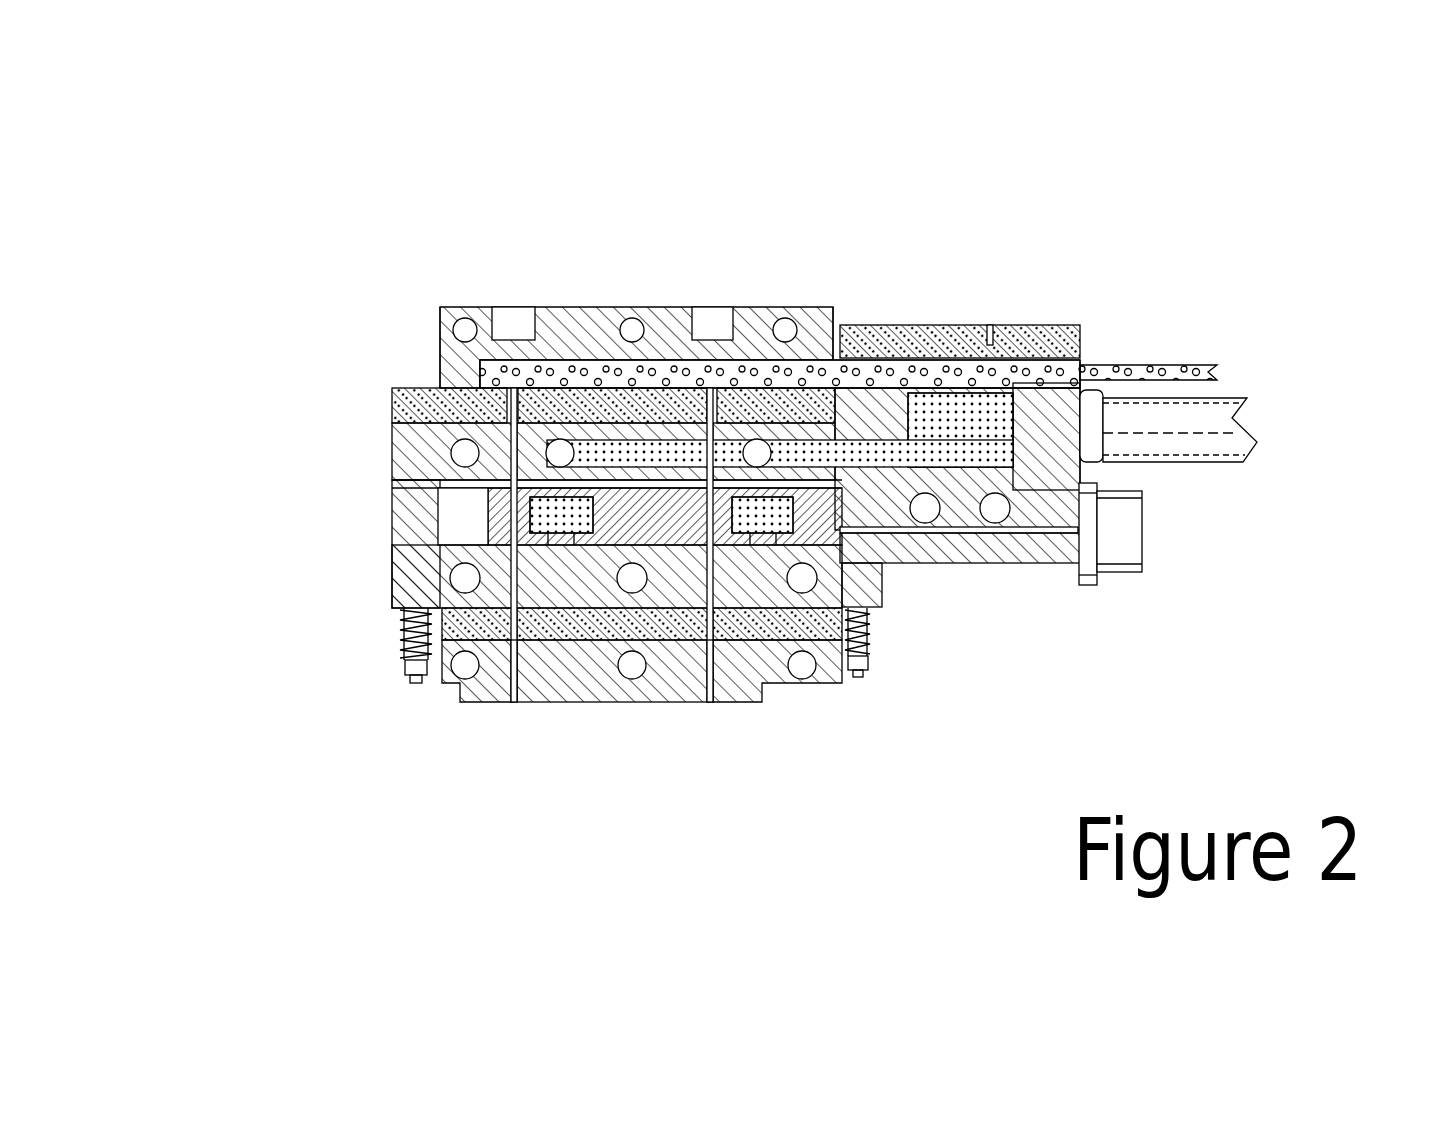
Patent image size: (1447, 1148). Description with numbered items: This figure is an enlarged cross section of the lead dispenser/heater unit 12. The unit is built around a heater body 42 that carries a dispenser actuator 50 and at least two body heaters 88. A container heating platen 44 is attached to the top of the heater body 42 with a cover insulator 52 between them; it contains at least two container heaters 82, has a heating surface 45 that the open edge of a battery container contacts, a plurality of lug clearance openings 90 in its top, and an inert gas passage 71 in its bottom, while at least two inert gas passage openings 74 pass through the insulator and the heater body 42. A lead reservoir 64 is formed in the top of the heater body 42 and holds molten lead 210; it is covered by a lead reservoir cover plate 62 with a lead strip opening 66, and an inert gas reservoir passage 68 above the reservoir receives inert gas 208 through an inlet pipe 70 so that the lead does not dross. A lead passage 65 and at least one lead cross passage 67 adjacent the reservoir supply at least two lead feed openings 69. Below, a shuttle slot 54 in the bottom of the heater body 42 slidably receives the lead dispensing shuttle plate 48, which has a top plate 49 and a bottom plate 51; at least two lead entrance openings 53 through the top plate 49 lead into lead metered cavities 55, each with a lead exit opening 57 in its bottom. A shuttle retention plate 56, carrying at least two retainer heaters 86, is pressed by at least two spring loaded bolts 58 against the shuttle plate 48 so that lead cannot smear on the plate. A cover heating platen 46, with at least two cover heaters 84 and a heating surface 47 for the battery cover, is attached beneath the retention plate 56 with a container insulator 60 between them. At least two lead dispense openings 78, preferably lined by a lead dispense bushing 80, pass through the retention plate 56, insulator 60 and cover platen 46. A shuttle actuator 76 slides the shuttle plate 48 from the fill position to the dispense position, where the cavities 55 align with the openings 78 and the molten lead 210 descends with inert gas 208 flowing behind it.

The lead dispenser/heater unit 12 is at (765, 491).
The heater body 42 is at (1099, 502).
The container heating platen 44 is at (783, 307).
The heating surface 45 is at (482, 308).
The cover heating platen 46 is at (515, 663).
The heating surface 47 is at (553, 670).
The lead dispensing shuttle plate 48 is at (840, 537).
The top plate 49 is at (395, 478).
The dispenser actuator 50 is at (1217, 435).
The bottom plate 51 is at (450, 492).
The cover insulator 52 is at (393, 392).
The lead entrance openings 53 is at (745, 447).
The shuttle slot 54 is at (455, 520).
The lead metered cavities 55 is at (500, 528).
The shuttle retention plate 56 is at (402, 618).
The lead exit opening 57 is at (738, 665).
The spring loaded bolts 58 is at (873, 633).
The container insulator 60 is at (402, 647).
The lead reservoir cover plate 62 is at (1017, 408).
The lead reservoir 64 is at (1183, 368).
The lead passage 65 is at (780, 332).
The lead strip opening 66 is at (990, 340).
The lead cross passage 67 is at (410, 418).
The inert gas reservoir passage 68 is at (1000, 365).
The lead feed openings 69 is at (941, 622).
The inlet pipe 70 is at (1163, 375).
The inert gas passage 71 is at (716, 380).
The inert gas passage openings 74 is at (478, 382).
The shuttle actuator 76 is at (1120, 550).
The lead dispense openings 78 is at (545, 700).
The lead dispense bushing 80 is at (430, 739).
The container heaters 82 is at (835, 305).
The cover heaters 84 is at (470, 668).
The retainer heaters 86 is at (870, 663).
The body heaters 88 is at (1008, 612).
The lug clearance openings 90 is at (715, 325).
The inert gas 208 is at (1125, 302).
The molten lead 210 is at (967, 427).